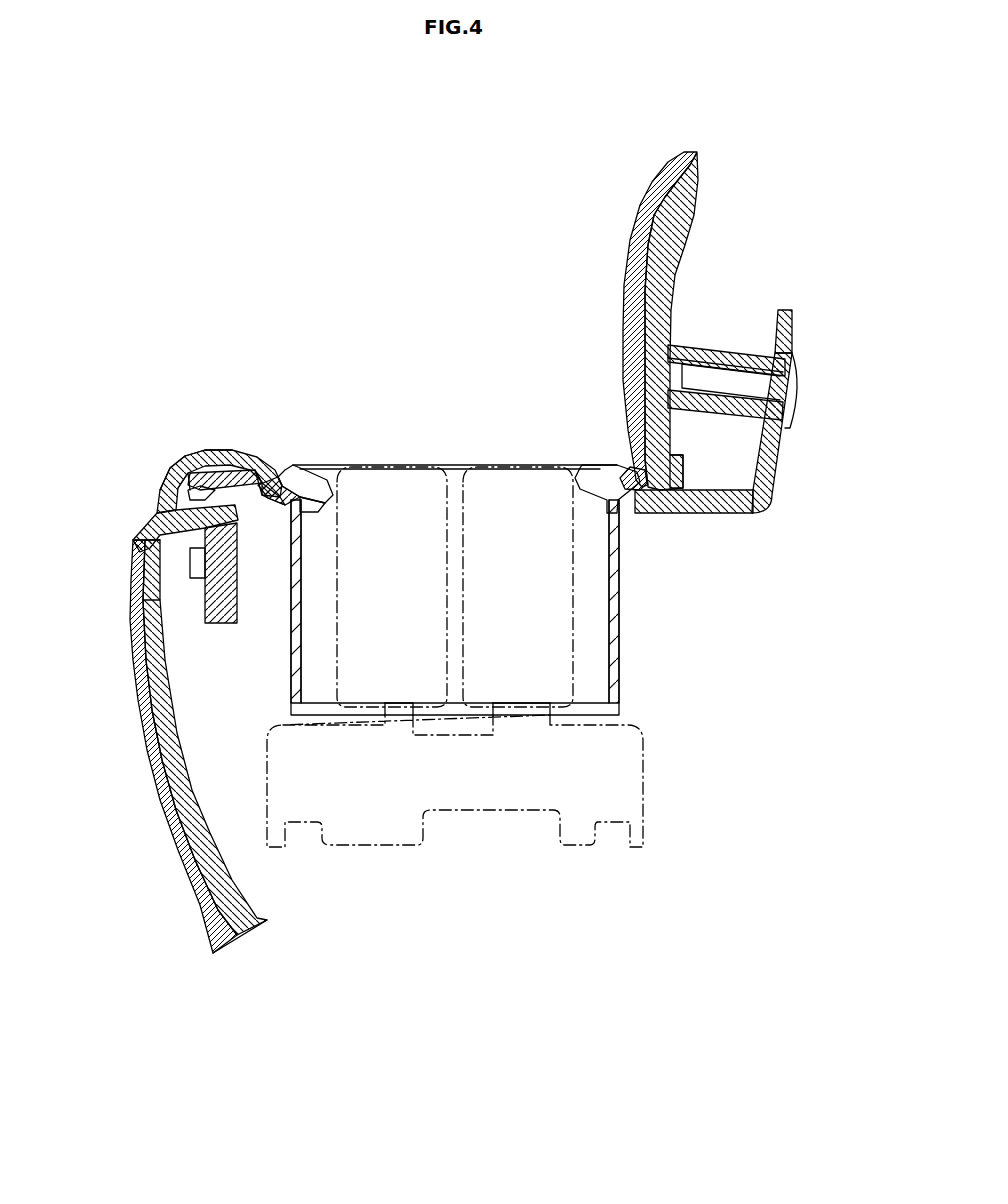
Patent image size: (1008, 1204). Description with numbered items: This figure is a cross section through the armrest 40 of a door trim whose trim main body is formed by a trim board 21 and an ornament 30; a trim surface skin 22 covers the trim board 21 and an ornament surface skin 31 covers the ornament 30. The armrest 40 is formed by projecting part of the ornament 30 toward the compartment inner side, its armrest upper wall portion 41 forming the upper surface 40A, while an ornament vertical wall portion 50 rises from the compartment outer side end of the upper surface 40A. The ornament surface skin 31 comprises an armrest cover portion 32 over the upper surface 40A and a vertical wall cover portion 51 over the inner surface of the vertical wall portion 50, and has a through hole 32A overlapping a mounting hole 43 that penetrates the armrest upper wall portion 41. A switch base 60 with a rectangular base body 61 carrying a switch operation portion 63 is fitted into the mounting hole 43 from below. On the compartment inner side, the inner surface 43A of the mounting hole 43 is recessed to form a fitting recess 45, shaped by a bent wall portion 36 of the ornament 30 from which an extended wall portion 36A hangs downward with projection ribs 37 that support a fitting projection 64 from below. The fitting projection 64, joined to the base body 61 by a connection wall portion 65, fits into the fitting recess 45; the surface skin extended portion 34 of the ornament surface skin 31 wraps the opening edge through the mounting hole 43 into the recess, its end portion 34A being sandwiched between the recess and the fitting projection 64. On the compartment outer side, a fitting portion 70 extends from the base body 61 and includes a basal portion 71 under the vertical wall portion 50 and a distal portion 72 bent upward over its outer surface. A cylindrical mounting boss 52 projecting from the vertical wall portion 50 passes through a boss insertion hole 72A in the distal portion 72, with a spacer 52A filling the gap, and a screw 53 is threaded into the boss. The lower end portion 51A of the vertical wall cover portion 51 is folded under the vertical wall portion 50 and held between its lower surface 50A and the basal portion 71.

The trim board 21 is at (252, 936).
The trim surface skin 22 is at (192, 880).
The ornament 30 is at (716, 166).
The ornament surface skin 31 is at (649, 351).
The armrest cover portion 32 is at (205, 462).
The through hole 32A is at (320, 470).
The surface skin extended portion 34 is at (248, 455).
The end portion 34A is at (190, 470).
The wall portion 36 is at (165, 512).
The extended wall portion 36A is at (250, 600).
The projection rib 37 is at (247, 633).
The armrest 40 is at (120, 617).
The upper surface 40A is at (225, 455).
The armrest upper wall portion 41 is at (205, 455).
The mounting hole 43 is at (313, 426).
The inner surface 43A is at (276, 478).
The fitting recess 45 is at (200, 492).
The ornament vertical wall portion 50 is at (695, 236).
The lower surface 50A is at (658, 492).
The vertical wall cover portion 51 is at (630, 200).
The lower end portion 51A is at (648, 494).
The mounting boss 52 is at (726, 352).
The spacer 52A is at (768, 354).
The screw 53 is at (788, 418).
The switch base 60 is at (634, 700).
The base body 61 is at (590, 465).
The switch operation portion 63 is at (398, 690).
The fitting projection 64 is at (178, 478).
The connection wall portion 65 is at (305, 527).
The fitting portion 70 is at (835, 470).
The basal portion 71 is at (765, 508).
The distal portion 72 is at (772, 483).
The boss insertion hole 72A is at (796, 340).